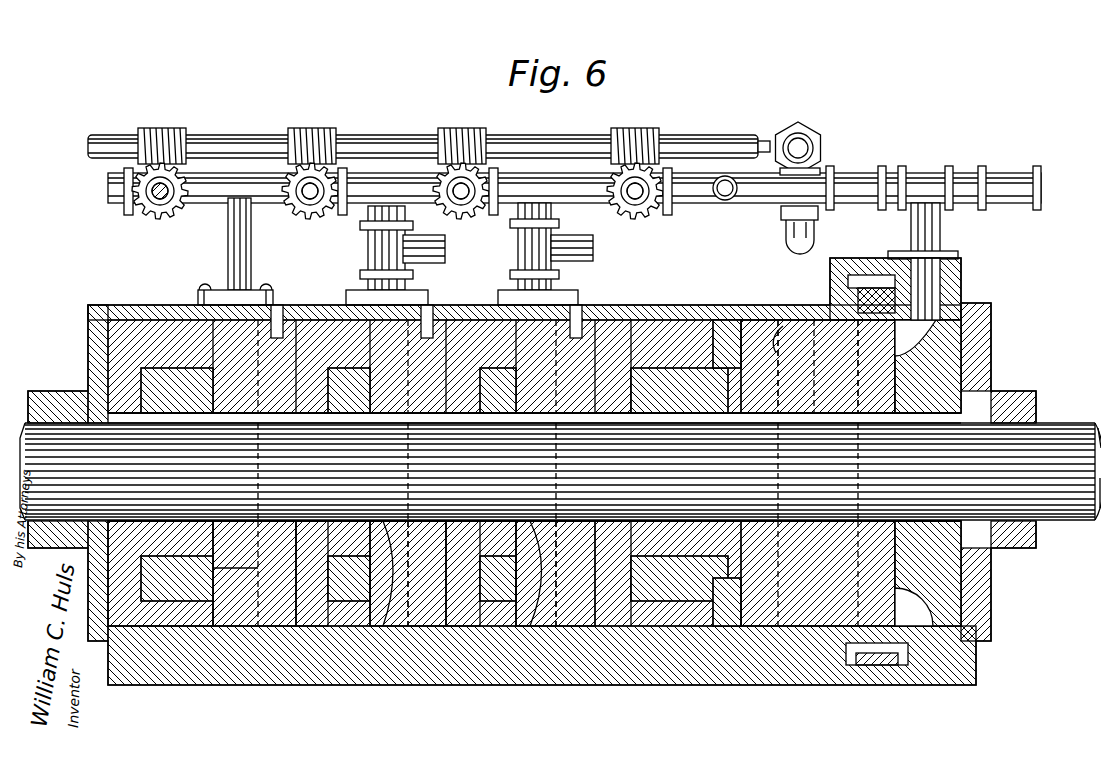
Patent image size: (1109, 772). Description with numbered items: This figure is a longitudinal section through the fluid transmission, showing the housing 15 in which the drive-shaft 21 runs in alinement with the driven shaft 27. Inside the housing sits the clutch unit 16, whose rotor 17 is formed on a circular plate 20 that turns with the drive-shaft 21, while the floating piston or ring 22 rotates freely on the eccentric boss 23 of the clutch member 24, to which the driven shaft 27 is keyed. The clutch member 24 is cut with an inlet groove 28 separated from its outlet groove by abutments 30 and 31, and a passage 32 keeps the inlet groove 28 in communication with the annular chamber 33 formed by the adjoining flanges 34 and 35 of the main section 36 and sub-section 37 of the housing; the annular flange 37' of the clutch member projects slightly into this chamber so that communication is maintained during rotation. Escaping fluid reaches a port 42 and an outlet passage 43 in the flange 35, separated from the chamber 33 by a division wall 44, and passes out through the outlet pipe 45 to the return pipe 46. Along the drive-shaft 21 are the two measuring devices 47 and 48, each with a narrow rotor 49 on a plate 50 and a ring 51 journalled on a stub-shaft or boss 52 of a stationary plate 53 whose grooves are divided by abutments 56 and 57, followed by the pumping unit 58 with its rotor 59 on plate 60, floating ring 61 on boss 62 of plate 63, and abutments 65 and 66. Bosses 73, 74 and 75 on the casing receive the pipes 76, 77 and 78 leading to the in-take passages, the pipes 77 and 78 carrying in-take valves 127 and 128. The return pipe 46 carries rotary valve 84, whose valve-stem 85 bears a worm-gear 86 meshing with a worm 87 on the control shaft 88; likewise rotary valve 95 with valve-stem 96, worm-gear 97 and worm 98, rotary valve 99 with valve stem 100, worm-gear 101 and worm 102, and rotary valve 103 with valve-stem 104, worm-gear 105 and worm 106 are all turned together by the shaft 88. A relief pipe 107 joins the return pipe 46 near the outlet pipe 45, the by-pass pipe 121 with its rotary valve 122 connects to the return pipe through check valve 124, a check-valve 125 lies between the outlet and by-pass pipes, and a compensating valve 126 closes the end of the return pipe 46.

The housing 15 is at (622, 312).
The clutch unit 16 is at (728, 320).
The rotor 17 is at (673, 325).
The circular plate 20 is at (605, 600).
The drive-shaft 21 is at (70, 432).
The floating piston or ring 22 is at (690, 590).
The boss 23 is at (715, 600).
The clutch member 24 is at (762, 330).
The driven shaft 27 is at (1045, 416).
The inlet groove 28 is at (757, 600).
The abutment 30 is at (768, 300).
The abutment 31 is at (770, 670).
The passage 32 is at (806, 312).
The annular chamber 33 is at (845, 660).
The flange 34 is at (852, 262).
The flange 35 is at (878, 245).
The main section 36 is at (128, 300).
The sub-section 37 is at (989, 619).
The annular flange 37' is at (924, 619).
The port 42 is at (983, 322).
The outlet passage 43 is at (960, 300).
The division wall 44 is at (918, 325).
The outlet pipe 45 is at (932, 228).
The return pipe 46 is at (530, 180).
The measuring device 47 is at (475, 360).
The measuring device 48 is at (330, 360).
The rotor 49 is at (360, 600).
The plate 50 is at (300, 600).
The piston or ring 51 is at (335, 595).
The stub-shaft or boss 52 is at (385, 600).
The stationary plate 53 is at (410, 610).
The abutment 56 is at (272, 318).
The abutment 57 is at (400, 615).
The pumping unit 58 is at (170, 600).
The rotor 59 is at (195, 620).
The plate 60 is at (84, 350).
The floating ring or piston 61 is at (100, 640).
The stub-shaft or boss 62 is at (120, 540).
The plate 63 is at (255, 605).
The abutment 65 is at (180, 318).
The abutment 66 is at (230, 600).
The boss 73 is at (196, 286).
The boss 74 is at (345, 286).
The boss 75 is at (498, 286).
The pipe 76 is at (243, 268).
The pipe 77 is at (405, 266).
The pipe 78 is at (551, 266).
The rotary valve 84 is at (116, 184).
The valve-stem 85 is at (160, 190).
The worm-gear 86 is at (158, 205).
The worm 87 is at (152, 124).
The shaft 88 is at (370, 136).
The rotary valve 95 is at (335, 208).
The valve-stem 96 is at (290, 204).
The worm-gear 97 is at (303, 200).
The worm 98 is at (302, 124).
The rotary valve 99 is at (486, 208).
The valve stem 100 is at (445, 195).
The worm-gear 101 is at (458, 200).
The worm 102 is at (455, 124).
The rotary valve 103 is at (660, 208).
The valve-stem 104 is at (628, 200).
The worm-gear 105 is at (618, 196).
The worm 106 is at (628, 124).
The relief pipe 107 is at (723, 190).
The by-pass pipe 121 is at (806, 228).
The rotary valve 122 is at (796, 126).
The check valve 124 is at (826, 162).
The check-valve 125 is at (860, 170).
The compensating valve 126 is at (990, 165).
The in-take valve 127 is at (437, 244).
The in-take valve 128 is at (585, 242).